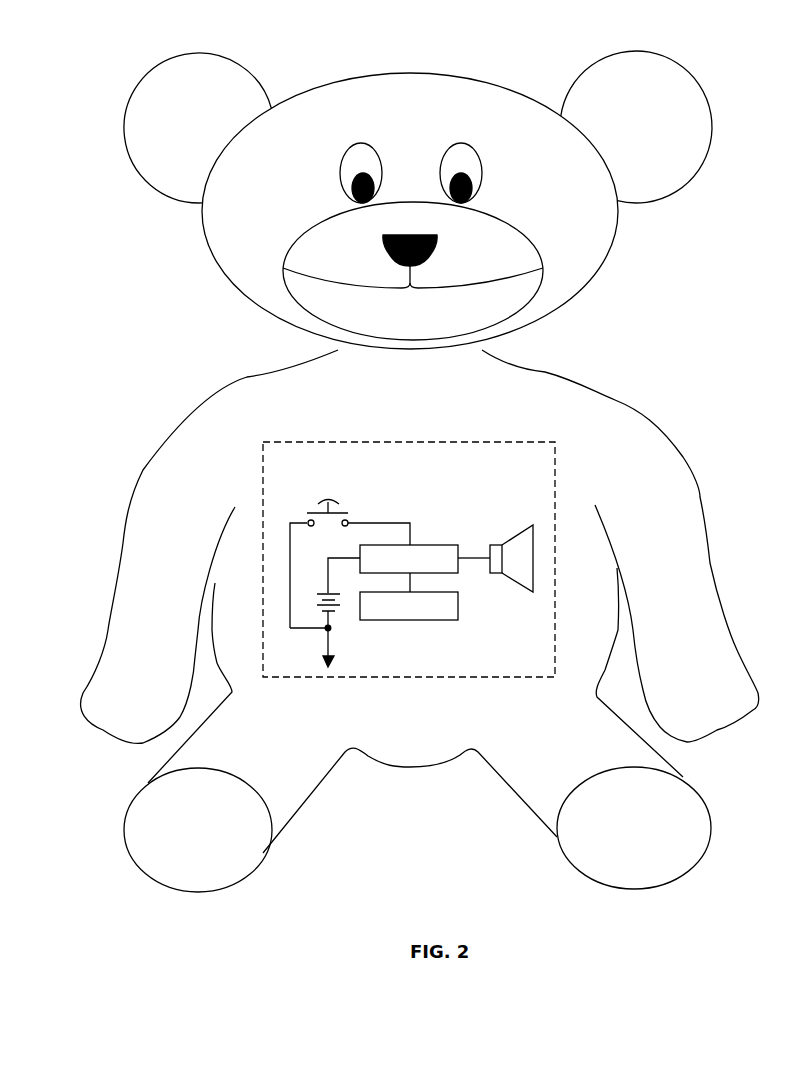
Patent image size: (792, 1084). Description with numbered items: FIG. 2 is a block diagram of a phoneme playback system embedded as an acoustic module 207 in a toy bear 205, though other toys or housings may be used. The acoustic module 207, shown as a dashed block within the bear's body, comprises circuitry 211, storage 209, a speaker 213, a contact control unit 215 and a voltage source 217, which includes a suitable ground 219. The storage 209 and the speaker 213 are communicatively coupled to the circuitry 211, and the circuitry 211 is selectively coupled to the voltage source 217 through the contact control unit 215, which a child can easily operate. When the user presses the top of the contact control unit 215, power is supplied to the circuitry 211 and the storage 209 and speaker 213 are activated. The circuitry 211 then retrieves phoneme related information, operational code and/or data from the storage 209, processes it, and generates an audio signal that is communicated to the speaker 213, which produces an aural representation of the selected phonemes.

The toy bear 205 is at (653, 417).
The acoustic module 207 is at (387, 442).
The storage 209 is at (458, 607).
The circuitry 211 is at (445, 544).
The speaker 213 is at (503, 544).
The contact control unit 215 is at (312, 513).
The voltage source 217 is at (337, 603).
The ground 219 is at (327, 653).